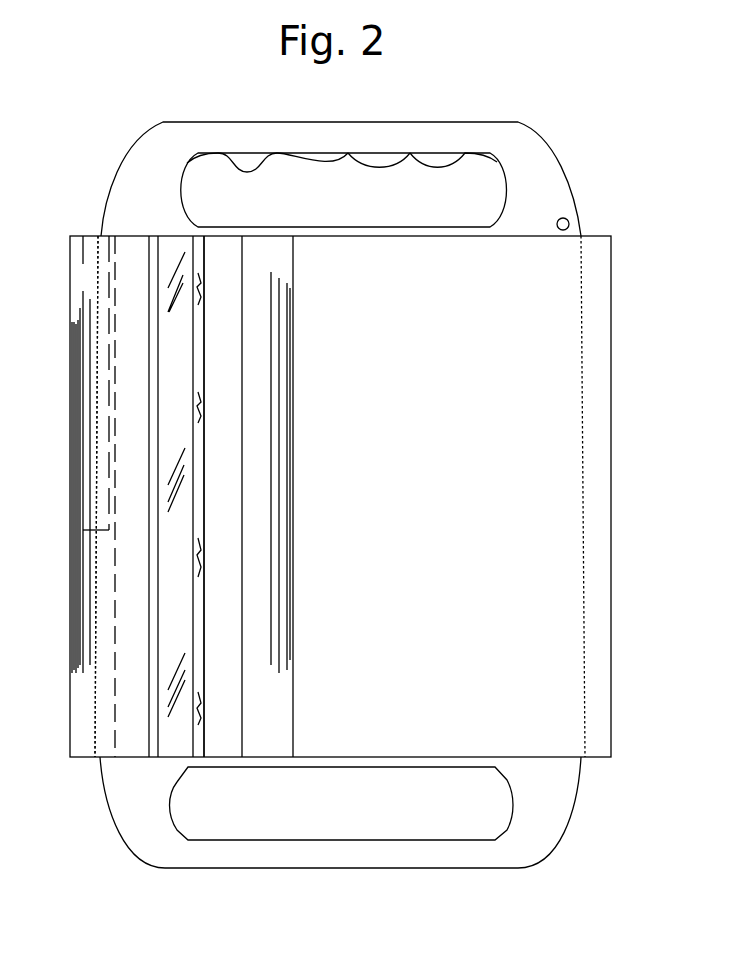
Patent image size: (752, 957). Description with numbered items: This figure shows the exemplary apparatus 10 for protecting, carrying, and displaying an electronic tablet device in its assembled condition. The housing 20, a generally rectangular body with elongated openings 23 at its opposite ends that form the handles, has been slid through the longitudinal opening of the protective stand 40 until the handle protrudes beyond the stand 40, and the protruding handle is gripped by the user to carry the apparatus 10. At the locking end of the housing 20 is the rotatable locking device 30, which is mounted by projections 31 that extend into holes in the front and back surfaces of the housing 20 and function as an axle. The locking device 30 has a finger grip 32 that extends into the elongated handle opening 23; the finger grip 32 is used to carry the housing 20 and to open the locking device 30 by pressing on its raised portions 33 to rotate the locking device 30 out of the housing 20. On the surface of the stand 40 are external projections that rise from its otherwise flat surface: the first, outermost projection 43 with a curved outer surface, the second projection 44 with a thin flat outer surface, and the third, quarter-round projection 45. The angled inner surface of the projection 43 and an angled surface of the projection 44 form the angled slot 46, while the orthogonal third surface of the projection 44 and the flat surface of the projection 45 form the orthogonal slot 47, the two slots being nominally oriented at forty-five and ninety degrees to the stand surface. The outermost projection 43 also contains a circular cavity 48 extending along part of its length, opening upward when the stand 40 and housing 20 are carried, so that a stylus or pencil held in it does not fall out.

The apparatus 10 is at (78, 100).
The housing 20 is at (104, 781).
The elongated openings 23 is at (462, 213).
The locking device 30 is at (252, 181).
The projections 31 is at (559, 218).
The finger grip 32 is at (348, 155).
The raised portions 33 is at (380, 173).
The protective stand 40 is at (611, 694).
The first outermost projection 43 is at (130, 425).
The second projection 44 is at (199, 360).
The third quarter-round projection 45 is at (277, 258).
The angled slot 46 is at (160, 344).
The orthogonal slot 47 is at (224, 426).
The circular cavity 48 is at (90, 248).